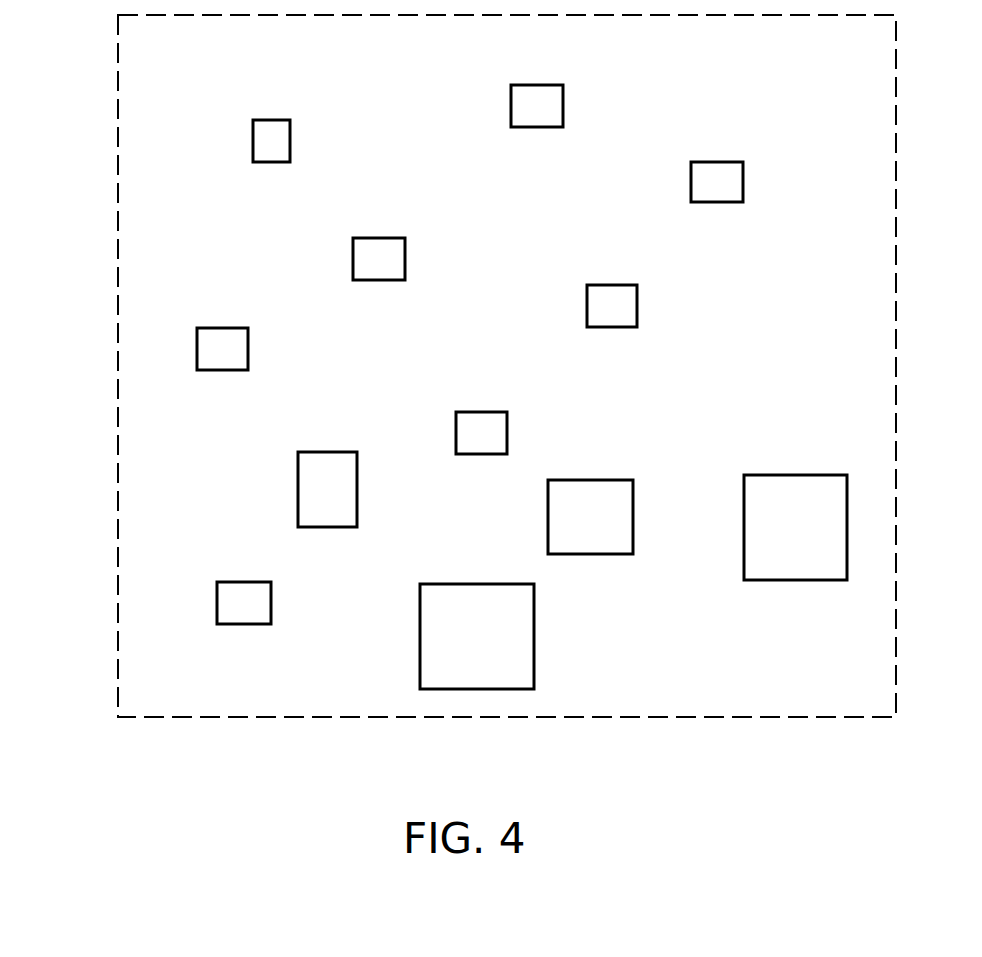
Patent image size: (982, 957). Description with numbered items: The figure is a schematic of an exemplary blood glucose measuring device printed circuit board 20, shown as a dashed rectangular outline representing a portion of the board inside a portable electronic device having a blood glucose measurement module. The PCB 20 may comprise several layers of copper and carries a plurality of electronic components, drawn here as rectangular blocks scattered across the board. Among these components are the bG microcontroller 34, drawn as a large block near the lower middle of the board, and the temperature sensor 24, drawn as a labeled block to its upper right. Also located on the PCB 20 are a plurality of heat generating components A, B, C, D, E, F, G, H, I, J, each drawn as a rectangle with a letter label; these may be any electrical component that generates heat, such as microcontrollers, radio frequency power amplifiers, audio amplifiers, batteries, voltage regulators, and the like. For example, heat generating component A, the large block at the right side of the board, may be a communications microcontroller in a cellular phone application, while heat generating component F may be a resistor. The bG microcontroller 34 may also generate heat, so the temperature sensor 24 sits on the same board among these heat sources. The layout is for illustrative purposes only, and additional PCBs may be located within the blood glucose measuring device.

The printed circuit board 20 is at (97, 117).
The temperature sensor 24 is at (635, 518).
The bG microcontroller 34 is at (536, 638).
The heat generating component A is at (797, 475).
The heat generating component B is at (481, 412).
The heat generating component C is at (612, 285).
The heat generating component D is at (717, 162).
The heat generating component E is at (537, 85).
The heat generating component F is at (378, 238).
The heat generating component G is at (272, 120).
The heat generating component H is at (222, 328).
The heat generating component I is at (326, 452).
The heat generating component J is at (243, 582).